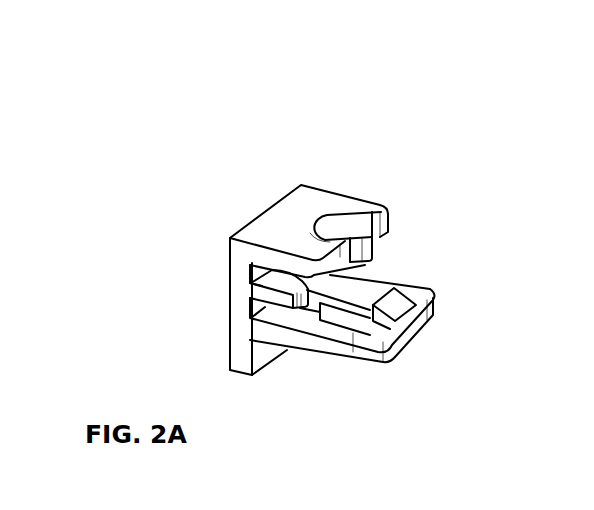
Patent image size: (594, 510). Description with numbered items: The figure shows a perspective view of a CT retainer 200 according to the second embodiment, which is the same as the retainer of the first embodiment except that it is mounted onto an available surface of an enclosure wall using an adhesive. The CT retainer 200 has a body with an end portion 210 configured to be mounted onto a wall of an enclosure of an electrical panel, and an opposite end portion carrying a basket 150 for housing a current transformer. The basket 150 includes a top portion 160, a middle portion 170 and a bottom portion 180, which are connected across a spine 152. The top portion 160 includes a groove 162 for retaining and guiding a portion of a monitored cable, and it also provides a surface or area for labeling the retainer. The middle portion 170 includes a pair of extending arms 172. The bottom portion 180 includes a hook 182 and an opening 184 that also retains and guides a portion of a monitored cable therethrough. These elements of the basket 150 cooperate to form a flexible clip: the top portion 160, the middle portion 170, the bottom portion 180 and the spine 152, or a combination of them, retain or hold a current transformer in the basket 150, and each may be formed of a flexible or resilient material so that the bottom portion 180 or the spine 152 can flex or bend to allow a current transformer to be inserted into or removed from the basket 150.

The basket 150 is at (438, 113).
The spine 152 is at (242, 350).
The top portion 160 is at (308, 188).
The groove 162 is at (369, 218).
The middle portion 170 is at (374, 239).
The extending arms 172 is at (368, 258).
The bottom portion 180 is at (304, 344).
The hook 182 is at (398, 296).
The opening 184 is at (358, 321).
The CT retainer 200 is at (471, 121).
The end portion 210 is at (228, 309).